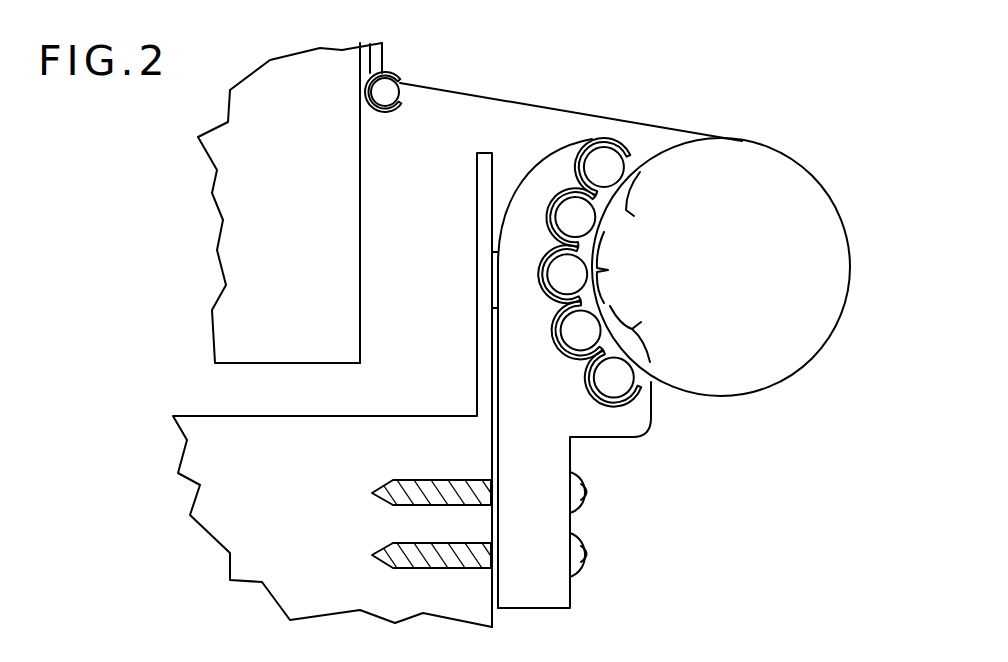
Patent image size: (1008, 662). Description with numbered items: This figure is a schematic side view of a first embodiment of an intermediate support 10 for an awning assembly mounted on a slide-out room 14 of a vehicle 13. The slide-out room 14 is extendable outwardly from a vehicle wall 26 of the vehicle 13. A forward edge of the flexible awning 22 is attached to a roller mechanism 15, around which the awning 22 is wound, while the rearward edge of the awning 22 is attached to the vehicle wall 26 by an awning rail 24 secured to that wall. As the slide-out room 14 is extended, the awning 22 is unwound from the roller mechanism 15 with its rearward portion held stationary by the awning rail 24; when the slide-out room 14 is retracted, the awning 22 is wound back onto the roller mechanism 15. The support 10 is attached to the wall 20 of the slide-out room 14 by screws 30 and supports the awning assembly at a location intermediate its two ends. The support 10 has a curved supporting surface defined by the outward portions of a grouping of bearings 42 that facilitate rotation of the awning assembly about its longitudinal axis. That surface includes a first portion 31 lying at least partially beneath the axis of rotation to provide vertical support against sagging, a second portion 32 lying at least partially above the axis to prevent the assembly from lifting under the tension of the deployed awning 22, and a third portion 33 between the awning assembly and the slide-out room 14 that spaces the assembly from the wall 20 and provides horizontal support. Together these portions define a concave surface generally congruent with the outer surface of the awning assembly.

The intermediate support 10 is at (637, 441).
The vehicle 13 is at (298, 237).
The slide-out room 14 is at (360, 565).
The roller mechanism 15 is at (788, 192).
The wall of the slide-out room 20 is at (490, 623).
The awning 22 is at (494, 98).
The awning rail 24 is at (387, 63).
The vehicle wall 26 is at (360, 252).
The screws 30 is at (583, 510).
The first portion of the curved supporting surface 31 is at (644, 334).
The second portion of the curved supporting surface 32 is at (647, 203).
The third portion of the curved supporting surface 33 is at (626, 267).
The bearings 42 is at (549, 190).